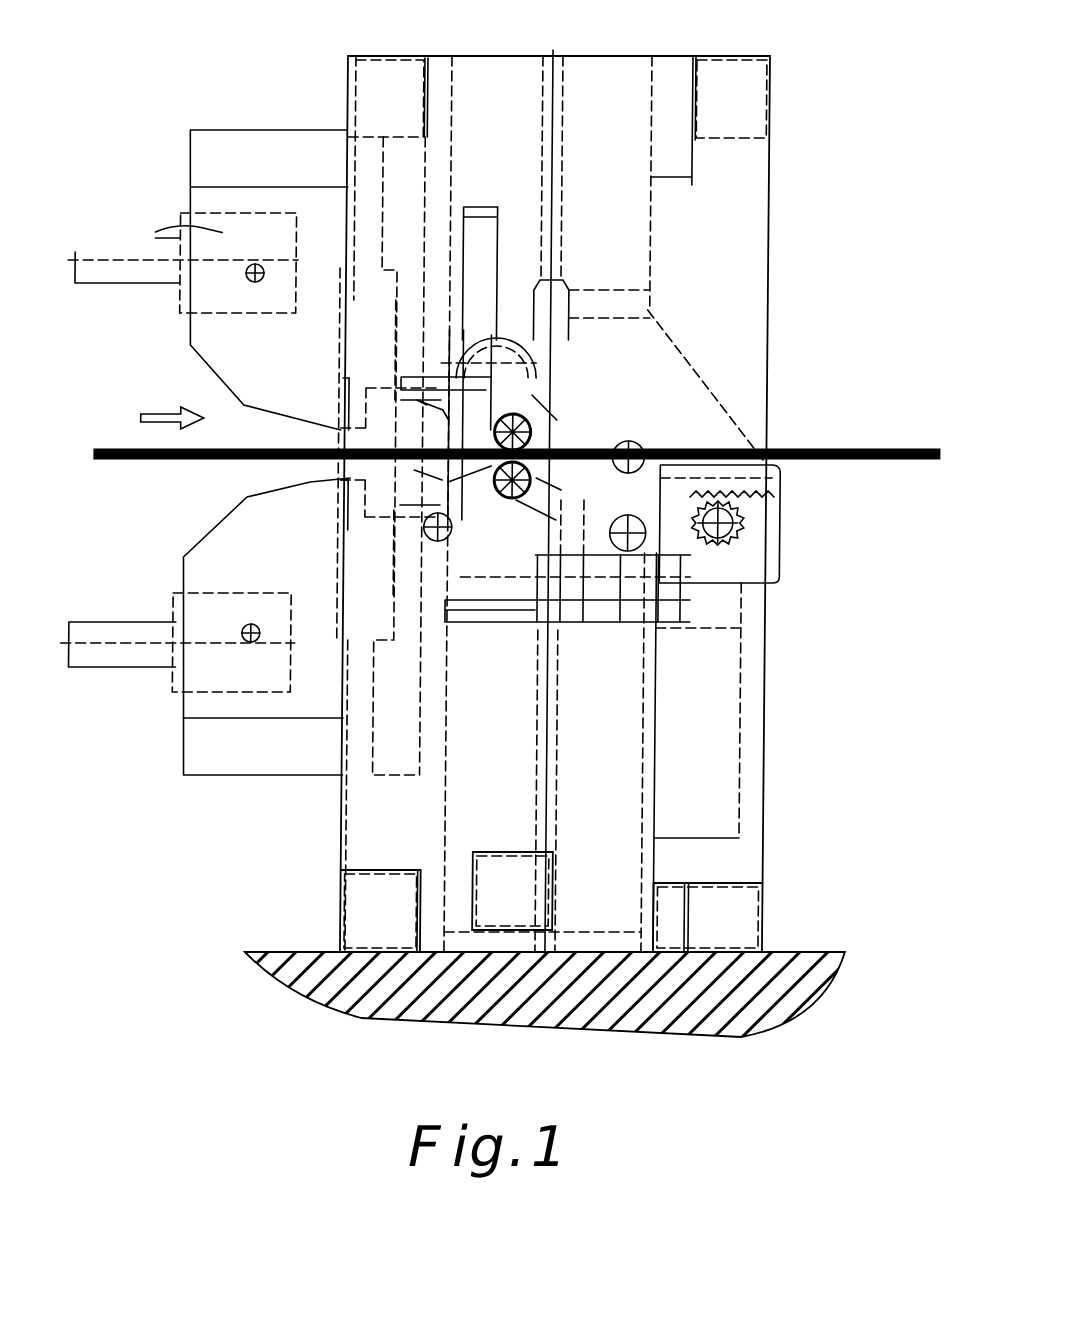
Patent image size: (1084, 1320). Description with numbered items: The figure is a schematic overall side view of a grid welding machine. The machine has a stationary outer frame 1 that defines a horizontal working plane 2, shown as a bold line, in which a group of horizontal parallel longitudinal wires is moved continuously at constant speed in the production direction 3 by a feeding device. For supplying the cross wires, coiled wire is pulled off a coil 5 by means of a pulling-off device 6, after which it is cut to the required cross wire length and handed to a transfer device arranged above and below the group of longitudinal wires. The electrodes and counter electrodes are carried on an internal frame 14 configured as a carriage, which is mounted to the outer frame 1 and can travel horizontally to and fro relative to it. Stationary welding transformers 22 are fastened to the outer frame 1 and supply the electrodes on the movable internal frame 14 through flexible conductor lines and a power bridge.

The stationary outer frame 1 is at (746, 917).
The horizontal working plane 2 is at (272, 430).
The production direction 3 is at (163, 376).
The coil 5 is at (216, 673).
The pulling-off device 6 is at (300, 377).
The internal frame 14 is at (695, 410).
The stationary welding transformers 22 is at (725, 785).